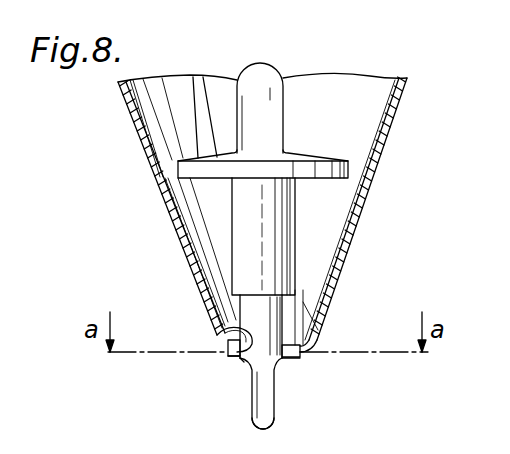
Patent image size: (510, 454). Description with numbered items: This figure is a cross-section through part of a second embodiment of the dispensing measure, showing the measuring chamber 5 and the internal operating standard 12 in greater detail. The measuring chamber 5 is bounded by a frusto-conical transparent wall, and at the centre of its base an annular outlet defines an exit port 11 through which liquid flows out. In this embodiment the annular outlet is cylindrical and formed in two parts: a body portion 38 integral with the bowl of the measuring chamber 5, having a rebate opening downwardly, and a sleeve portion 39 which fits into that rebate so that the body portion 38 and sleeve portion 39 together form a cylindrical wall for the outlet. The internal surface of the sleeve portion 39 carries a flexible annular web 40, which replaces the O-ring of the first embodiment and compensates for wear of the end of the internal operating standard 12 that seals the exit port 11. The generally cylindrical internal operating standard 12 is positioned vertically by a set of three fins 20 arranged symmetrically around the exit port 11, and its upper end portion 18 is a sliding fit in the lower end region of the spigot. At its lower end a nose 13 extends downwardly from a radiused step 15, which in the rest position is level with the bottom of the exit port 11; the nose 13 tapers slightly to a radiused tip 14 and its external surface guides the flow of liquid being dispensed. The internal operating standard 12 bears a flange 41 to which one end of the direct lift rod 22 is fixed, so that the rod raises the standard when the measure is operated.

The measuring chamber 5 is at (358, 132).
The exit port 11 is at (236, 360).
The internal operating standard 12 is at (273, 260).
The nose 13 is at (263, 408).
The radiused tip 14 is at (270, 420).
The radiused step 15 is at (283, 364).
The upper end portion 18 is at (262, 113).
The fins 20 is at (302, 318).
The direct lift rod 22 is at (197, 112).
The body portion 38 is at (228, 352).
The sleeve portion 39 is at (232, 358).
The flexible annular web 40 is at (222, 328).
The flange 41 is at (210, 177).